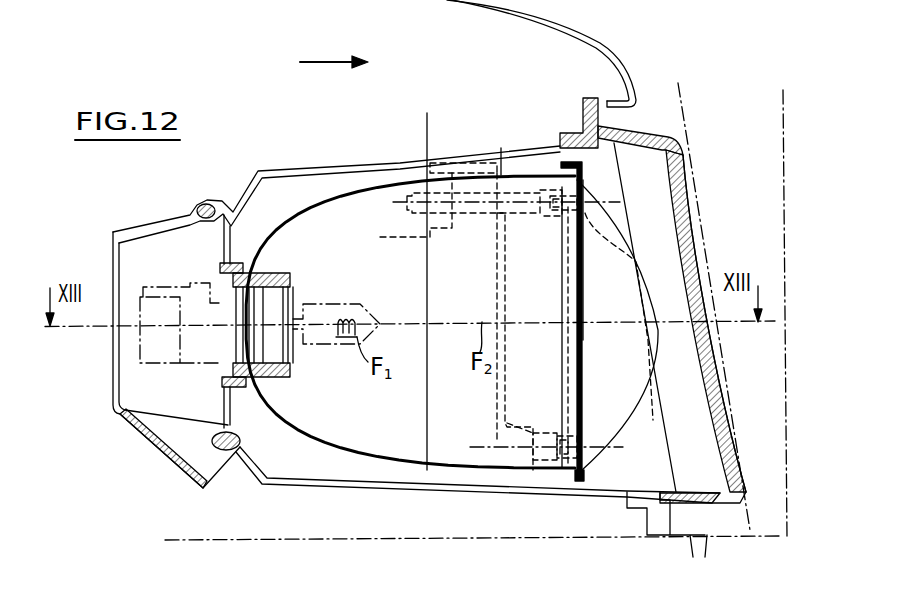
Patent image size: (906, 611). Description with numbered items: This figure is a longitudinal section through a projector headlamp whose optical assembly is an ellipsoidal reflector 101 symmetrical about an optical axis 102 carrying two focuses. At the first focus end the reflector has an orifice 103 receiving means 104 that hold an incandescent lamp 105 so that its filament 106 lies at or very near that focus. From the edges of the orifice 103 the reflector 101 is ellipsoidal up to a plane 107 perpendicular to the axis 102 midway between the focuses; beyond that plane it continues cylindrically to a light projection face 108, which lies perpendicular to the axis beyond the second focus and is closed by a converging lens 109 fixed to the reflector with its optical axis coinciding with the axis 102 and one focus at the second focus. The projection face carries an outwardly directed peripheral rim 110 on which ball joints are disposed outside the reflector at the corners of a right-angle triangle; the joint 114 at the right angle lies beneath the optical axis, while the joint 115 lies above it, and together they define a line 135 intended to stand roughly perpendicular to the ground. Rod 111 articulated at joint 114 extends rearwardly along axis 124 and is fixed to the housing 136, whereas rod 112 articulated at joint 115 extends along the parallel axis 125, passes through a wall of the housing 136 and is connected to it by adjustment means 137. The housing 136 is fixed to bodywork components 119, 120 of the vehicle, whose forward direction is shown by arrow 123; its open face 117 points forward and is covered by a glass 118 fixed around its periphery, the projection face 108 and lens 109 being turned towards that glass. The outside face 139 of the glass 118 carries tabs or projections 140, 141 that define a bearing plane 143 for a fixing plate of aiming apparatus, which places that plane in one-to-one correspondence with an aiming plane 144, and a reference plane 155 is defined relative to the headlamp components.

The reflector 101 is at (367, 480).
The axis 102 is at (440, 324).
The orifice 103 is at (292, 292).
The means for holding an incandescent lamp 104 is at (293, 362).
The incandescent lamp 105 is at (350, 303).
The filament 106 is at (350, 340).
The plane 107 is at (428, 258).
The light projection face 108 is at (584, 361).
The converging lens 109 is at (630, 380).
The peripheral rim 110 is at (584, 474).
The rod 111 is at (550, 436).
The rod 112 is at (522, 216).
The ball joint 114 is at (568, 437).
The ball joint 115 is at (619, 316).
The open face 117 is at (624, 187).
The glass 118 is at (720, 352).
The bodywork component 119 is at (575, 134).
The bodywork component 120 is at (640, 510).
The arrow 123 is at (330, 62).
The axis 124 is at (485, 446).
The axis 125 is at (405, 204).
The line 135 is at (562, 318).
The housing 136 is at (433, 478).
The adjustment means 137 is at (442, 156).
The outside face 139 is at (702, 250).
The tab or projection 140 is at (678, 153).
The tab or projection 141 is at (727, 483).
The bearing plane 143 is at (685, 100).
The aiming plane 144 is at (788, 402).
The reference plane 155 is at (216, 543).